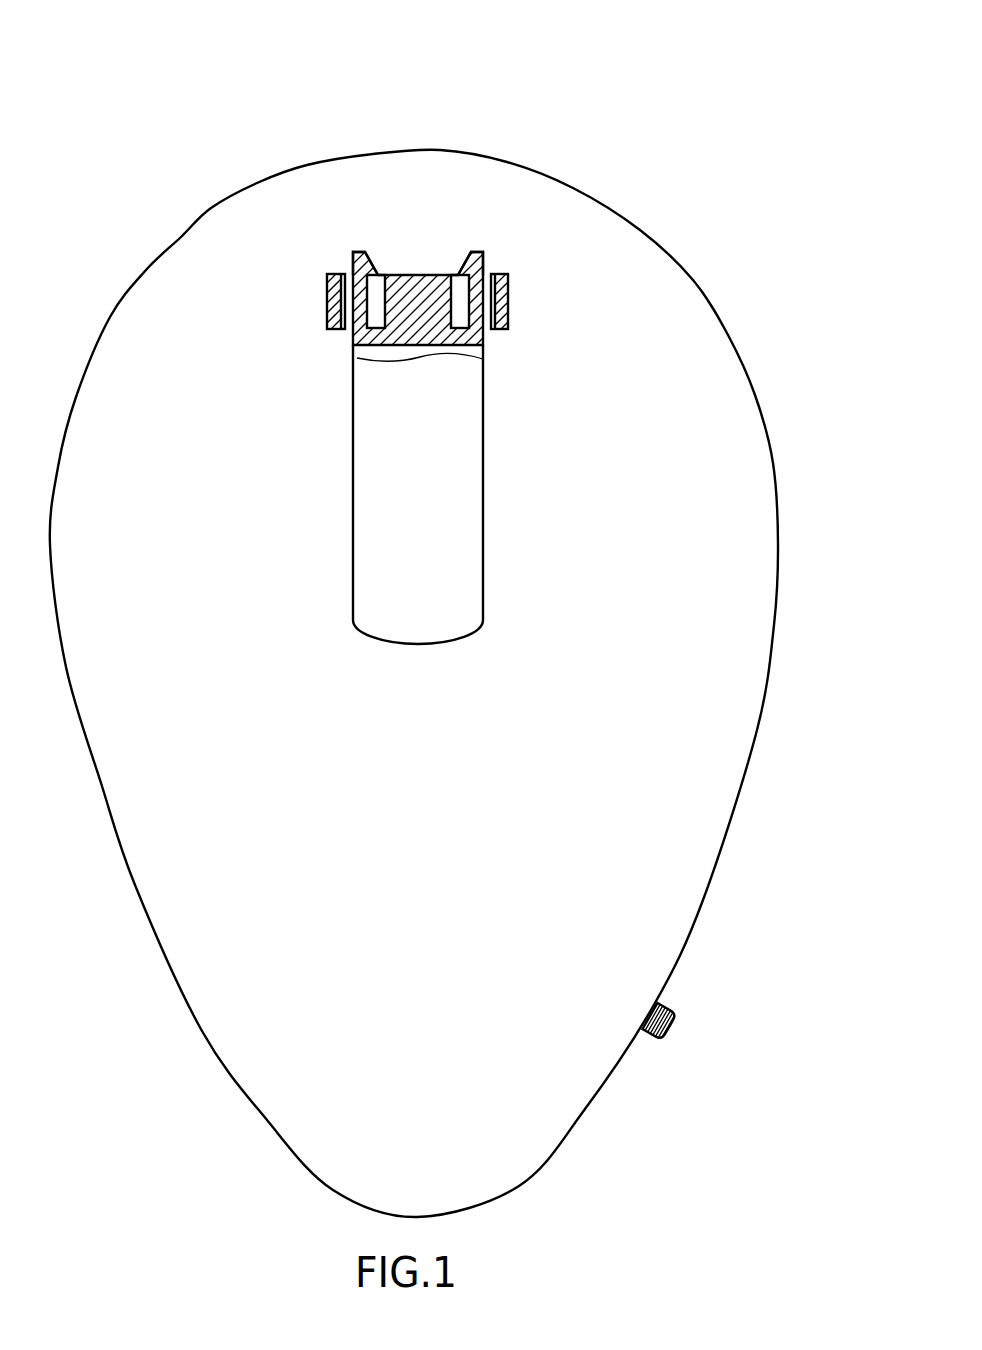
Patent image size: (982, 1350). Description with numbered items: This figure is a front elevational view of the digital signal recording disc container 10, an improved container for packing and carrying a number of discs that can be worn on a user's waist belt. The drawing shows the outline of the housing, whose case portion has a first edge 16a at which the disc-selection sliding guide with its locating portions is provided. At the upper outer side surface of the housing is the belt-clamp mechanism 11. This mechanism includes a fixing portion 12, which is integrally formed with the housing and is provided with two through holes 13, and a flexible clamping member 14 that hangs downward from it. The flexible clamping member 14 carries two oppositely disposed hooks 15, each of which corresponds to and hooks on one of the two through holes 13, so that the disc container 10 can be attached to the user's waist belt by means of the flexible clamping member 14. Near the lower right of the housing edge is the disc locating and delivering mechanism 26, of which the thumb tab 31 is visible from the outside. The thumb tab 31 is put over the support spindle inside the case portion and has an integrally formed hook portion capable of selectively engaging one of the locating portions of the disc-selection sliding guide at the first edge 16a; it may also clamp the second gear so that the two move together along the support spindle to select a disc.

The digital signal recording disc container 10 is at (557, 102).
The belt-clamp mechanism 11 is at (465, 233).
The fixing portion 12 is at (327, 307).
The through holes 13 is at (347, 283).
The flexible clamping member 14 is at (470, 550).
The hooks 15 is at (370, 268).
The first edge 16a is at (774, 625).
The disc locating and delivering mechanism 26 is at (688, 1010).
The thumb tab 31 is at (667, 1027).